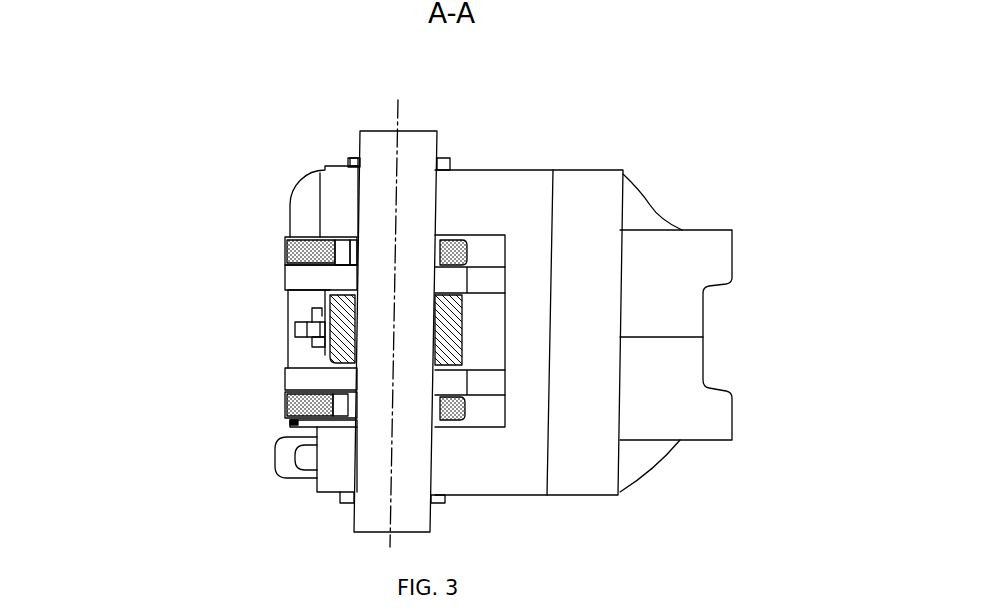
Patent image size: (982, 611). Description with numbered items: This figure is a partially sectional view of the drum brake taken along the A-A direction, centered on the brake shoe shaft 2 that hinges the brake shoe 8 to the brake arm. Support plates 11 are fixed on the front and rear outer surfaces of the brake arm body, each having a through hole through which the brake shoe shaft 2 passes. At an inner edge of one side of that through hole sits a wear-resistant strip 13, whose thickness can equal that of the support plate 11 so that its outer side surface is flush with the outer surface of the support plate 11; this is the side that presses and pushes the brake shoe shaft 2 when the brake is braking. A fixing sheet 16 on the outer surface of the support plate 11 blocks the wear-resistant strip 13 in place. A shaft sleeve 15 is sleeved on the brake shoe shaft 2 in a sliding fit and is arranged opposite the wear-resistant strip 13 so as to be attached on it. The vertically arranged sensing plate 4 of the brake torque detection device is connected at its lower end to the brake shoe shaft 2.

The brake shoe shaft 2 is at (390, 147).
The sensing plate 4 is at (345, 343).
The brake shoe 8 is at (500, 190).
The support plate 11 is at (293, 255).
The wear-resistant strip 13 is at (347, 257).
The shaft sleeve 15 is at (355, 243).
The fixing sheet 16 is at (290, 422).